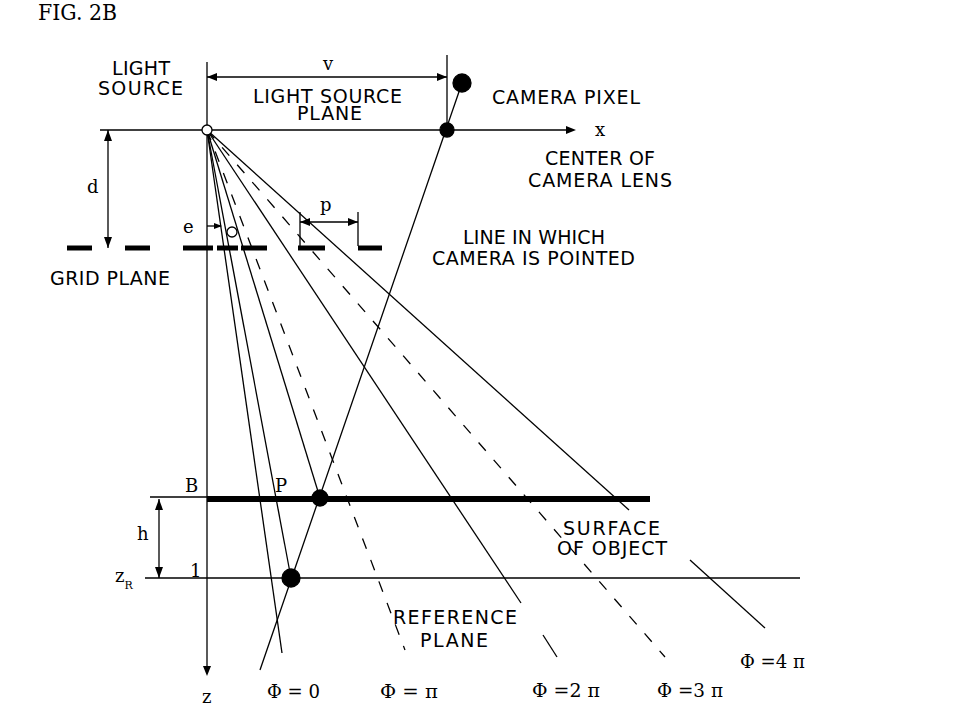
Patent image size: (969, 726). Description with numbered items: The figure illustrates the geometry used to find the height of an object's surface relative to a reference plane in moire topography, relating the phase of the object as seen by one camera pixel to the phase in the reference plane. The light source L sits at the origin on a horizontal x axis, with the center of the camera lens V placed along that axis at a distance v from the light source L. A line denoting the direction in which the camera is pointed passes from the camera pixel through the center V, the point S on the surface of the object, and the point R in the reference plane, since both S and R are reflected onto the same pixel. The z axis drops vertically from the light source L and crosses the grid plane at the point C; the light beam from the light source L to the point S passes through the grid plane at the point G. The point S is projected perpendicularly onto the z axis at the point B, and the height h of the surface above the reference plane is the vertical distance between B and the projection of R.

The location of light source L is at (196, 119).
The center of camera lens V is at (450, 142).
The point on surface of object S is at (356, 512).
The point in reference plane R is at (332, 595).
The point at which z axis and grid plane cross C is at (198, 263).
The point along z axis onto which point S is projected perpendicularly B is at (227, 265).
The point in grid plane through which light beam passes from light source to point S G is at (251, 263).